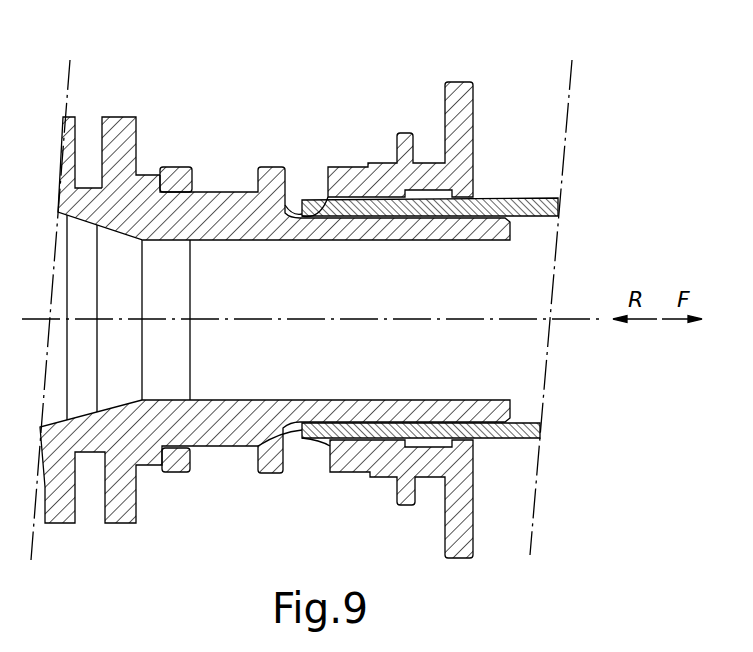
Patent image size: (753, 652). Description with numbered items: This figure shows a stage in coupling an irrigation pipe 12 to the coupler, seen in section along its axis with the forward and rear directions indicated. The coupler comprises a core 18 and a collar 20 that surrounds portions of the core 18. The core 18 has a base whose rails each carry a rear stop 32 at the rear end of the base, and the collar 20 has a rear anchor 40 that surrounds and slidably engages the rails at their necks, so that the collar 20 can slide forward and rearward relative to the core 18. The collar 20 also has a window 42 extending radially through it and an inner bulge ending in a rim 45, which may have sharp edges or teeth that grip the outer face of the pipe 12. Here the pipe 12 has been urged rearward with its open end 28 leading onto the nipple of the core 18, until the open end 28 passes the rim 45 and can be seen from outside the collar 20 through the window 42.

The irrigation pipe 12 is at (528, 197).
The core 18 is at (226, 182).
The collar 20 is at (413, 95).
The open end 28 is at (285, 431).
The rear stop 32 is at (156, 175).
The rear anchor 40 is at (183, 166).
The window 42 is at (302, 178).
The rim 45 is at (330, 199).